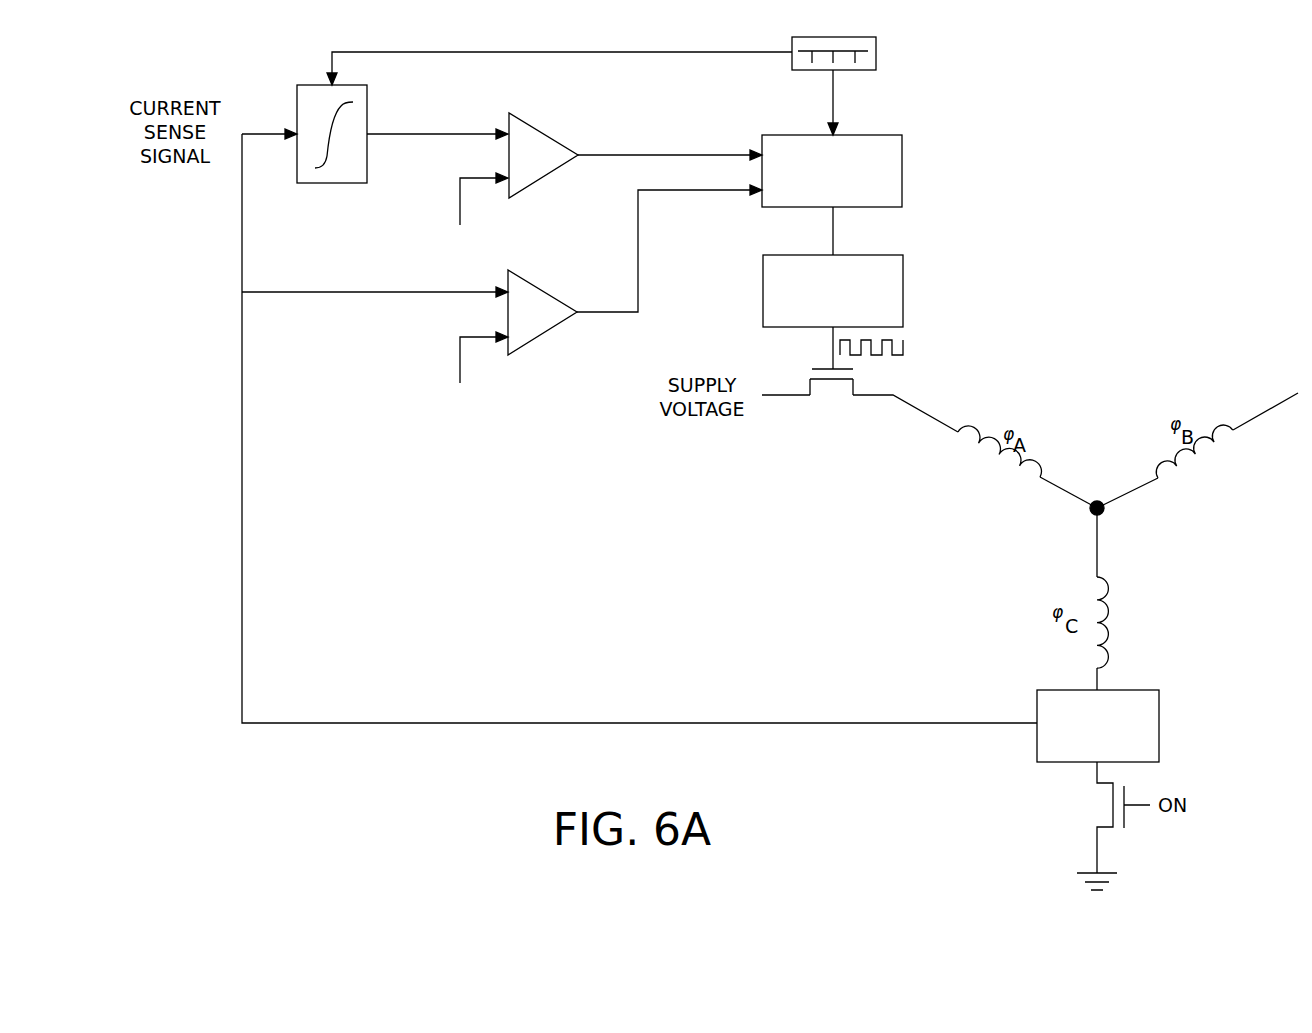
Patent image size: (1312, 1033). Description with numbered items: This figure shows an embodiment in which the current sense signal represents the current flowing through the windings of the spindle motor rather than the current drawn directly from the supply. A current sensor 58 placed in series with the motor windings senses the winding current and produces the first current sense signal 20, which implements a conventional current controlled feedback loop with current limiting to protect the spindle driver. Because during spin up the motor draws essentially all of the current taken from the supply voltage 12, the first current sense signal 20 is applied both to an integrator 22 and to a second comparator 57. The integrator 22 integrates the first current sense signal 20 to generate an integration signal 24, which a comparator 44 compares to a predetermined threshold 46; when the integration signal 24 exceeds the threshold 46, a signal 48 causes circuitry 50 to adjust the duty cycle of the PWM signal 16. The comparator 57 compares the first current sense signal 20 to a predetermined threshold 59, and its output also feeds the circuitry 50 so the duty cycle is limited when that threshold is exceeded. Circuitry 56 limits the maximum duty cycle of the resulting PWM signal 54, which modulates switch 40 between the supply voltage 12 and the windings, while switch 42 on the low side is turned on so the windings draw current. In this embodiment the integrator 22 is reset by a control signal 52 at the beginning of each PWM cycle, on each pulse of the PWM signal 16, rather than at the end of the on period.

The supply voltage 12 is at (766, 394).
The pulse width modulated (PWM) signal 16 is at (835, 97).
The first current sense signal 20 is at (241, 236).
The integrator 22 is at (334, 186).
The integration signal 24 is at (433, 132).
The switch 40 is at (832, 406).
The switch 42 is at (1126, 836).
The comparator 44 is at (541, 184).
The predetermined threshold 46 is at (458, 200).
The signal 48 is at (712, 153).
The circuitry 50 is at (904, 170).
The control signal 52 is at (625, 51).
The PWM signal having an adjusted duty cycle 54 is at (832, 340).
The circuitry for limiting the maximum duty cycle 56 is at (905, 290).
The comparator 57 is at (540, 340).
The current sensor 58 is at (1162, 725).
The predetermined threshold 59 is at (459, 357).